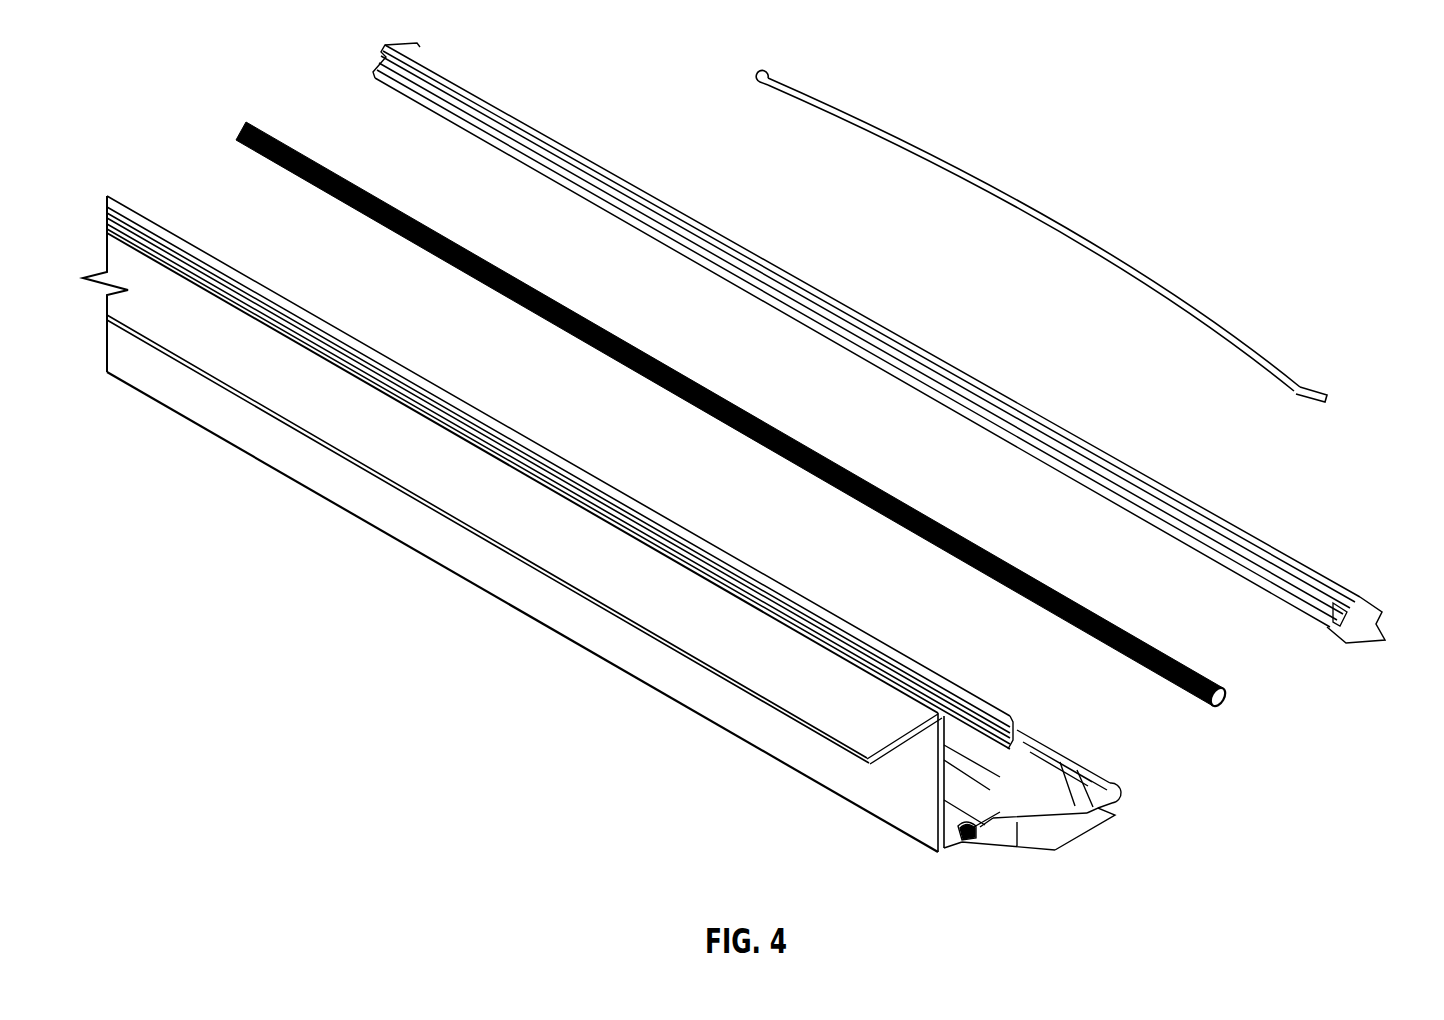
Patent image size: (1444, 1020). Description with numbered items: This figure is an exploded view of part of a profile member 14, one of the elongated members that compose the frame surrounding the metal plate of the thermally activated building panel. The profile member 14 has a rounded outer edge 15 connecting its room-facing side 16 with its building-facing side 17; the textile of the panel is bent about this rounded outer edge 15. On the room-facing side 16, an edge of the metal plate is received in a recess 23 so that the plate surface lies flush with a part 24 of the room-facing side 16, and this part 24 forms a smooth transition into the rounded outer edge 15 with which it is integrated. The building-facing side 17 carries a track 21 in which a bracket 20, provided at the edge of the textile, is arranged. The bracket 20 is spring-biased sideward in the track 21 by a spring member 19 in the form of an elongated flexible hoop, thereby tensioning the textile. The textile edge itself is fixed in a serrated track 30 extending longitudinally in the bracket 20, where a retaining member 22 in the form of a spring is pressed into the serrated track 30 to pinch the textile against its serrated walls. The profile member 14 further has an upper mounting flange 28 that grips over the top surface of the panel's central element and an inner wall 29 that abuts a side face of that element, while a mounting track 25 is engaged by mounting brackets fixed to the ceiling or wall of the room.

The profile member 14 is at (317, 498).
The rounded outer edge 15 is at (1112, 790).
The room-facing side 16 is at (1094, 838).
The building-facing side 17 is at (988, 697).
The spring member 19 is at (980, 175).
The bracket 20 is at (1215, 506).
The track 21 is at (1075, 770).
The retaining member 22 is at (732, 394).
The recess 23 is at (1058, 850).
The part of the room-facing side 24 is at (1115, 812).
The mounting track 25 is at (972, 727).
The upper mounting flange 28 is at (625, 596).
The inner wall 29 is at (885, 803).
The serrated track 30 is at (1362, 598).